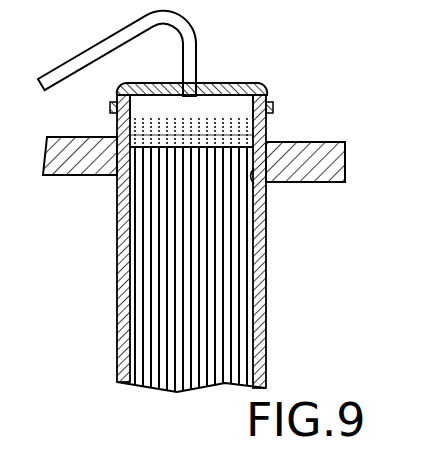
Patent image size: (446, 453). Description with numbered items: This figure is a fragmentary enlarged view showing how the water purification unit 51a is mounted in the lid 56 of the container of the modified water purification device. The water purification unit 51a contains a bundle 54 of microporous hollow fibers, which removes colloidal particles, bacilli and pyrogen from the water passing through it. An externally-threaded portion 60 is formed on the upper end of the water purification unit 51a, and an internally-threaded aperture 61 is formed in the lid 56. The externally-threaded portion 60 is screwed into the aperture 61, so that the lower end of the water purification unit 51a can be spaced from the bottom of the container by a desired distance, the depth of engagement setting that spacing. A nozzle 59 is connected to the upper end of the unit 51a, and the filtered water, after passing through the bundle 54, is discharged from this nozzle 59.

The nozzle 59 is at (101, 42).
The externally-threaded portion 60 is at (266, 132).
The lid 56 is at (310, 147).
The internally-threaded aperture 61 is at (258, 180).
The bundle of microporous hollow fibers 54 is at (137, 253).
The water purification unit 51a is at (231, 243).